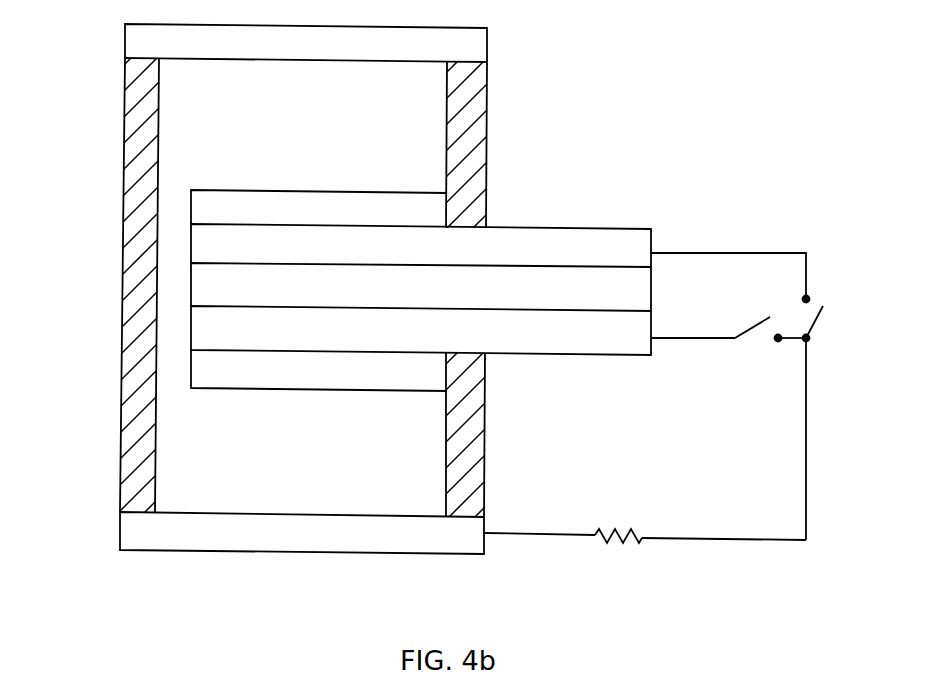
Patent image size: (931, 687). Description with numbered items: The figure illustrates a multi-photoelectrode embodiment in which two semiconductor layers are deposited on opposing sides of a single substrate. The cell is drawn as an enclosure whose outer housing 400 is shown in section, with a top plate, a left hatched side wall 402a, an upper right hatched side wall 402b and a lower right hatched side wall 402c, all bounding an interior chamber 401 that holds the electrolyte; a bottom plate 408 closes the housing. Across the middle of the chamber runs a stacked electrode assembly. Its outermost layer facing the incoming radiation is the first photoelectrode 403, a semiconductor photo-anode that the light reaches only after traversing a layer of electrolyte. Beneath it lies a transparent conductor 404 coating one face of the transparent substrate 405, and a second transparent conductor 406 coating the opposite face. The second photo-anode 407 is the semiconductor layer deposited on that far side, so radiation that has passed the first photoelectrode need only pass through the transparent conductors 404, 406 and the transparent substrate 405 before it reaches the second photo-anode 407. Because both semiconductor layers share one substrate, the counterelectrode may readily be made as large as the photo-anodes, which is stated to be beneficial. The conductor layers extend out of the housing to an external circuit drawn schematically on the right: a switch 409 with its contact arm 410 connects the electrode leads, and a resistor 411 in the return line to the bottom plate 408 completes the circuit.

The housing / top plate 400 is at (125, 43).
The interior chamber 401 is at (170, 90).
The left side wall 402a is at (125, 142).
The upper right side wall 402b is at (482, 97).
The lower right side wall 402c is at (485, 416).
The first photoelectrode 403 is at (193, 210).
The transparent conductor 404 is at (193, 249).
The transparent substrate 405 is at (186, 288).
The transparent conductor 406 is at (193, 329).
The second photo-anode 407 is at (193, 374).
The bottom plate 408 is at (120, 533).
The switch 409 is at (815, 319).
The switch contact arm 410 is at (750, 330).
The resistor 411 is at (613, 538).